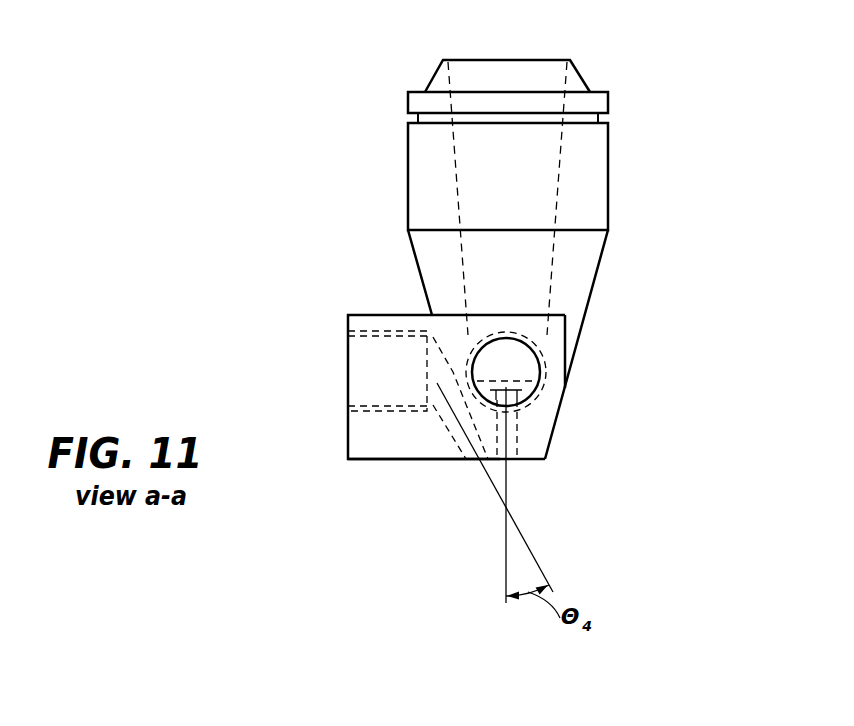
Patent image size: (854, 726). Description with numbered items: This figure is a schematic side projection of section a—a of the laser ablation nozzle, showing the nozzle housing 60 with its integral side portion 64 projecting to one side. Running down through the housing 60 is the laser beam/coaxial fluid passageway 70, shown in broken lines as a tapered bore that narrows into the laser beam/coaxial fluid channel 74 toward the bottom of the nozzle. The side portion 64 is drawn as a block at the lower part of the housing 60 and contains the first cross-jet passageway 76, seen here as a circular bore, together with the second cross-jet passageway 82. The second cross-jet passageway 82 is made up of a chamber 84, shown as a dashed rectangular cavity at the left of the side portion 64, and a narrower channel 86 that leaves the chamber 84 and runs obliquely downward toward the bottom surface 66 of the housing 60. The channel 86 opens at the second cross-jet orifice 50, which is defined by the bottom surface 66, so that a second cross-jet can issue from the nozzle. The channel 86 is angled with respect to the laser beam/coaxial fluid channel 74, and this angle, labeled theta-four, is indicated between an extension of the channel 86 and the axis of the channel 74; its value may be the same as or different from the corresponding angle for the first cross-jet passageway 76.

The second cross-jet orifice 50 is at (476, 460).
The housing 60 is at (407, 170).
The integral side portion 64 is at (383, 460).
The bottom surface 66 is at (427, 460).
The laser beam/coaxial fluid passageway 70 is at (537, 76).
The channel 74 is at (524, 435).
The first cross-jet passageway 76 is at (531, 373).
The second cross-jet passageway 82 is at (332, 368).
The chamber 84 is at (360, 353).
The channel 86 is at (463, 446).